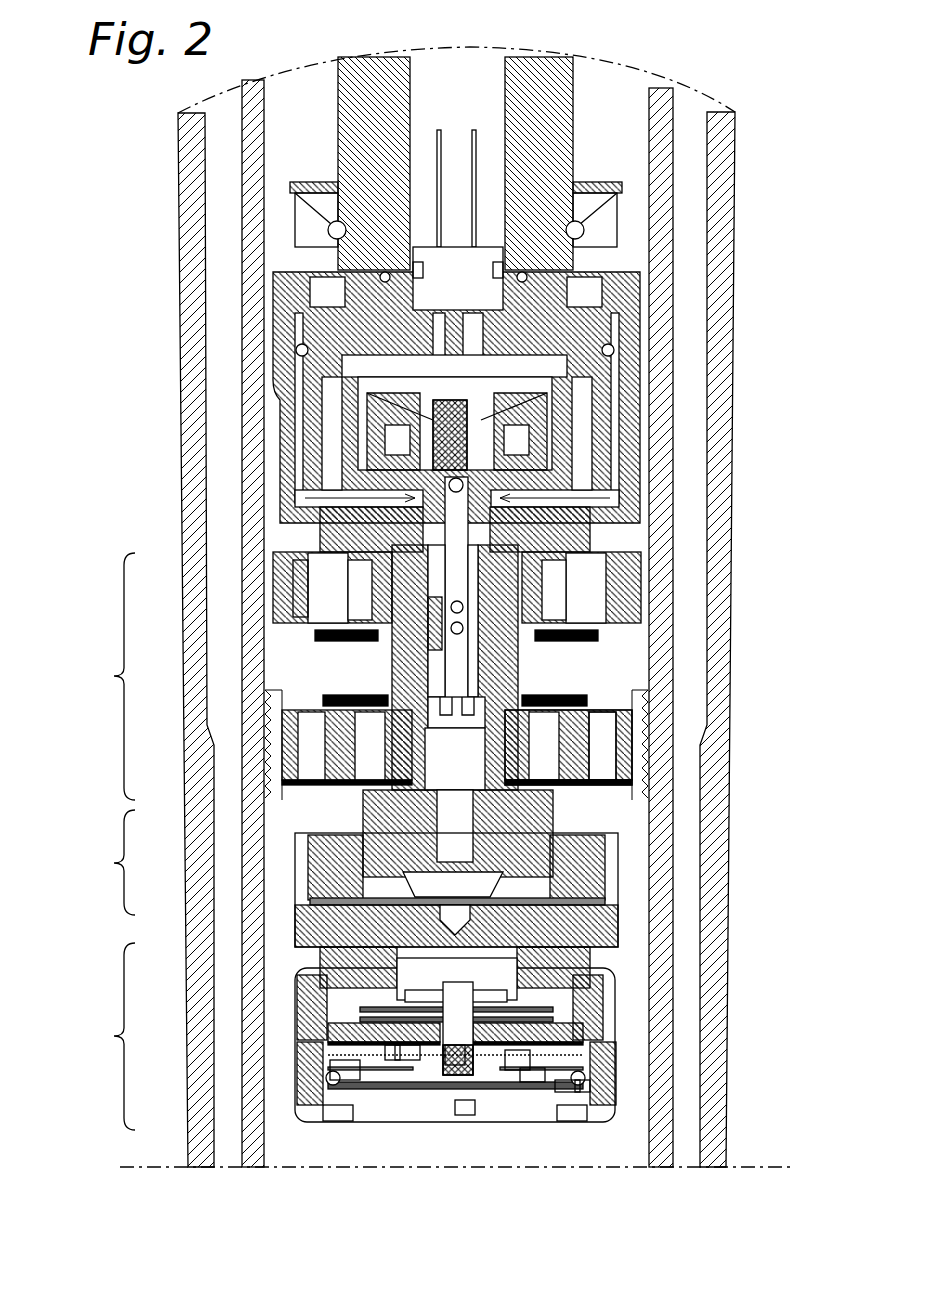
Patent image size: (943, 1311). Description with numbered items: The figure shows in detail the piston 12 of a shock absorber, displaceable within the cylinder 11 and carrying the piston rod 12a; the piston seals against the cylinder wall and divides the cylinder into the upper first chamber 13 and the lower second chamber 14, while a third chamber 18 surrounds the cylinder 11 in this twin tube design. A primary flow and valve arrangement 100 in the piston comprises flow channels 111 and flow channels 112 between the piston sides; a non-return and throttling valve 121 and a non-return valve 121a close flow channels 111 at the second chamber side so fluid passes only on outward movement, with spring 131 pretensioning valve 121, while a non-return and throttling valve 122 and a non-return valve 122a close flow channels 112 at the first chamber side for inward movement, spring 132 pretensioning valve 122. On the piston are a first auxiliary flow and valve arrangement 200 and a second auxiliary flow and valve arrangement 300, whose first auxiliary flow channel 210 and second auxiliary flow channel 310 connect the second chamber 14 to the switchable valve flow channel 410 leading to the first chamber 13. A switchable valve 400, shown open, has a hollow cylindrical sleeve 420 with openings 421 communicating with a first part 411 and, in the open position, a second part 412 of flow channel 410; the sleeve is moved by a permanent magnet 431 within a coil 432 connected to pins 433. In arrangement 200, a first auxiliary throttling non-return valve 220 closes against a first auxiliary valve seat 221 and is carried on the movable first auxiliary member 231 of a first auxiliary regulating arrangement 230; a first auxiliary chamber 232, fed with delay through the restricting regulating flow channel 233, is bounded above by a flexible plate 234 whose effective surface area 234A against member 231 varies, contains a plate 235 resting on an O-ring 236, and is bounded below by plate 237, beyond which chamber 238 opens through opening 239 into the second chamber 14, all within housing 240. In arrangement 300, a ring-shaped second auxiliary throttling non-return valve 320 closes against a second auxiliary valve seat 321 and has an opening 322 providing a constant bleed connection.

The cylinder 11 is at (250, 229).
The piston 12 is at (321, 130).
The piston rod 12a is at (540, 95).
The first chamber 13 is at (616, 130).
The second chamber 14 is at (466, 1157).
The third chamber 18 is at (688, 160).
The primary flow and valve arrangement 100 is at (114, 676).
The flow channels 111 is at (535, 600).
The flow channels 112 is at (302, 575).
The non-return and throttling valve 121 is at (600, 634).
The non-return valve 121a is at (600, 782).
The non-return and throttling valve 122 is at (345, 690).
The non-return valve 122a is at (320, 545).
The spring 131 is at (520, 700).
The spring 132 is at (340, 630).
The first auxiliary flow and valve arrangement 200 is at (114, 1036).
The first auxiliary flow channel 210 is at (495, 975).
The first auxiliary throttling non-return valve 220 is at (370, 1015).
The first auxiliary valve seat 221 is at (585, 1003).
The first auxiliary regulating arrangement 230 is at (625, 1022).
The movable first auxiliary member 231 is at (413, 1052).
The first auxiliary chamber 232 is at (530, 1077).
The regulating flow channel 233 is at (460, 1060).
The flexible plate 234 is at (583, 1065).
The effective surface area 234A is at (360, 1065).
The plate 235 is at (565, 1090).
The O-ring 236 is at (580, 1087).
The plate 237 is at (523, 1062).
The chamber 238 is at (400, 1050).
The opening 239 is at (460, 1110).
The housing 240 is at (350, 975).
The second auxiliary flow and valve arrangement 300 is at (114, 863).
The second auxiliary flow channel 310 is at (457, 820).
The second auxiliary throttling non-return valve 320 is at (330, 915).
The second auxiliary valve seat 321 is at (330, 880).
The opening 322 is at (335, 900).
The switchable valve 400 is at (290, 495).
The switchable valve flow channel 410 is at (510, 660).
The first part of switchable valve flow channel 411 is at (555, 470).
The second part of switchable valve flow channel 412 is at (570, 735).
The hollow cylindrical sleeve 420 is at (470, 520).
The openings 421 is at (545, 655).
The permanent magnet 431 is at (520, 430).
The coil 432 is at (500, 470).
The pins 433 is at (440, 128).